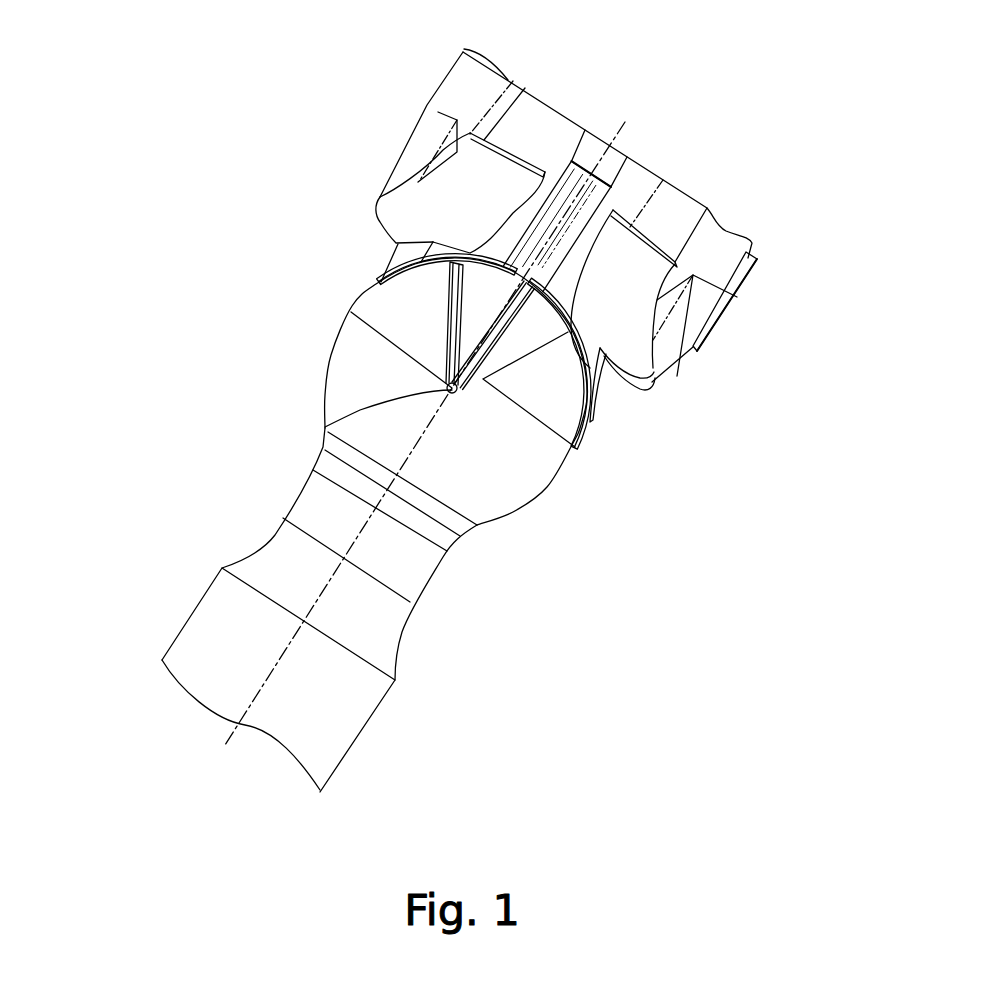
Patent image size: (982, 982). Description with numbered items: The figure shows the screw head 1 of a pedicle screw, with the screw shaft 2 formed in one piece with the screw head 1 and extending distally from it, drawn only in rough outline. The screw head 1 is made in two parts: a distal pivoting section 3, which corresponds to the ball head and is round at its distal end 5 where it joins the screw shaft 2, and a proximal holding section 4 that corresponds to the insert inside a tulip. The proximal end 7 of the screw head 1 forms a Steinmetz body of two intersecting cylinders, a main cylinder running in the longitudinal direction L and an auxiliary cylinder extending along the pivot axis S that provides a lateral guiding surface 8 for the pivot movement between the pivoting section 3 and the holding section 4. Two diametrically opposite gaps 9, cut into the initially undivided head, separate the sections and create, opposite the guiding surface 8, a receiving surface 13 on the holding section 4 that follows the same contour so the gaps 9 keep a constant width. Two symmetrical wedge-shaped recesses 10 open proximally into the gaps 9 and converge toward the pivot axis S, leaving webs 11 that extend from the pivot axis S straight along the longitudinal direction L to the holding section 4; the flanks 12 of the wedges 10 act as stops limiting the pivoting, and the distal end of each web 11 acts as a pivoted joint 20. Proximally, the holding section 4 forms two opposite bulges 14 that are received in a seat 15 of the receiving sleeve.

The screw head 1 is at (248, 170).
The screw shaft 2 is at (187, 620).
The pivoting section 3 is at (316, 360).
The holding section 4 is at (562, 111).
The distal end 5 is at (495, 490).
The proximal end 7 is at (398, 318).
The guiding surface 8 is at (592, 425).
The gaps 9 is at (594, 425).
The wedge-shaped recesses 10 is at (538, 317).
The web 11 is at (385, 255).
The flanks 12 is at (452, 300).
The receiving surface 13 is at (588, 368).
The bulges 14 is at (378, 190).
The seat 15 is at (730, 288).
The pivoted joint 20 is at (325, 427).
The pivot axis S is at (462, 415).
The longitudinal direction L is at (430, 420).